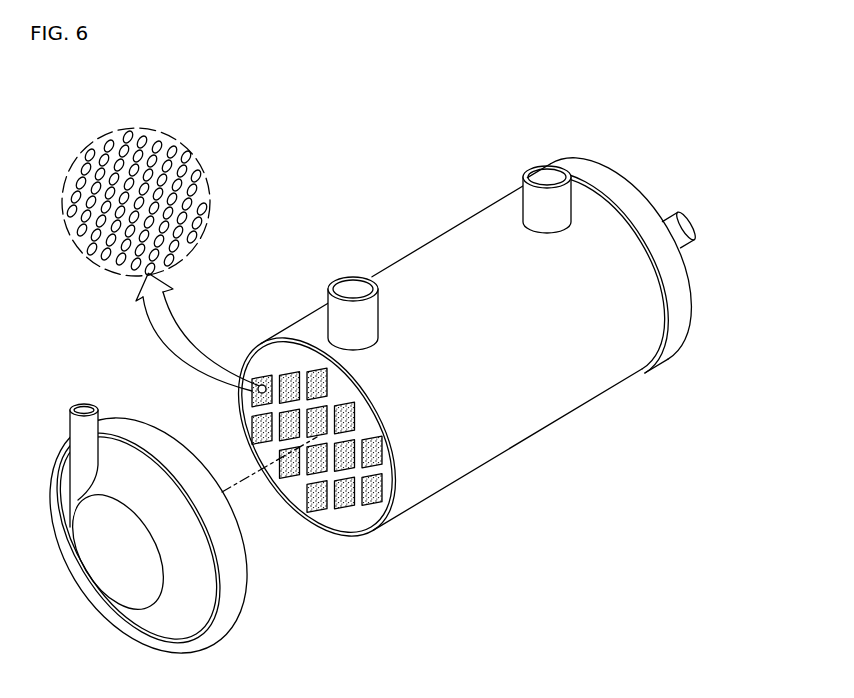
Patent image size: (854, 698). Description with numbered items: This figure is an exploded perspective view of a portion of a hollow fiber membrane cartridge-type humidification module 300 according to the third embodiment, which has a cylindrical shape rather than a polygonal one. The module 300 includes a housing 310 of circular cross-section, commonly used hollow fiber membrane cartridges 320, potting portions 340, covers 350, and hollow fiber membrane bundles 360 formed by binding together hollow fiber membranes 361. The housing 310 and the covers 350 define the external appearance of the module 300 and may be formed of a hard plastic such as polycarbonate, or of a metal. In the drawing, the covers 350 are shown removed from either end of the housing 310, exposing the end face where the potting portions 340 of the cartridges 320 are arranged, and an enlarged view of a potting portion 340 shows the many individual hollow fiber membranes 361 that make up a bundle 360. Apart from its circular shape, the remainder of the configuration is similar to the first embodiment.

The hollow fiber membrane cartridge-type humidification module 300 is at (373, 93).
The housing 310 is at (445, 233).
The hollow fiber membrane cartridge 320 is at (254, 422).
The potting portion 340 is at (142, 144).
The cover 350 is at (676, 294).
The hollow fiber membrane bundle 360 is at (273, 150).
The hollow fiber membrane 361 is at (182, 168).